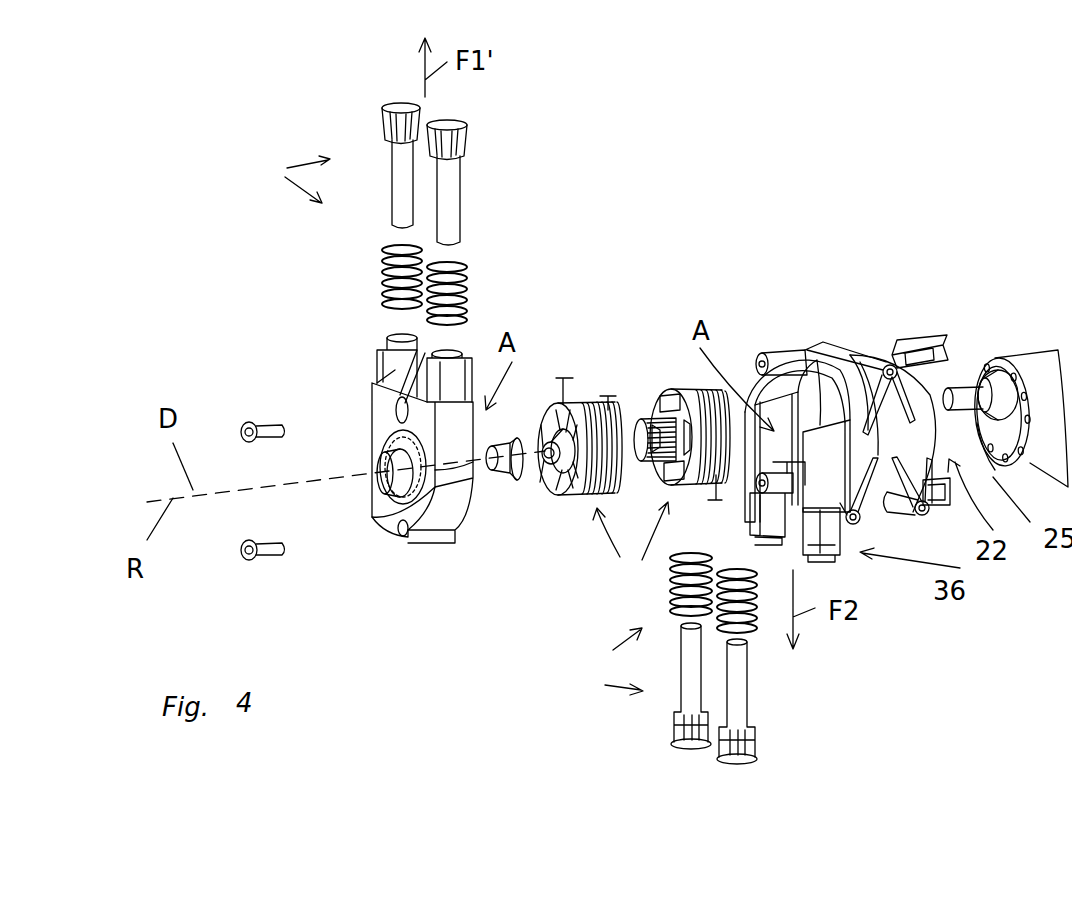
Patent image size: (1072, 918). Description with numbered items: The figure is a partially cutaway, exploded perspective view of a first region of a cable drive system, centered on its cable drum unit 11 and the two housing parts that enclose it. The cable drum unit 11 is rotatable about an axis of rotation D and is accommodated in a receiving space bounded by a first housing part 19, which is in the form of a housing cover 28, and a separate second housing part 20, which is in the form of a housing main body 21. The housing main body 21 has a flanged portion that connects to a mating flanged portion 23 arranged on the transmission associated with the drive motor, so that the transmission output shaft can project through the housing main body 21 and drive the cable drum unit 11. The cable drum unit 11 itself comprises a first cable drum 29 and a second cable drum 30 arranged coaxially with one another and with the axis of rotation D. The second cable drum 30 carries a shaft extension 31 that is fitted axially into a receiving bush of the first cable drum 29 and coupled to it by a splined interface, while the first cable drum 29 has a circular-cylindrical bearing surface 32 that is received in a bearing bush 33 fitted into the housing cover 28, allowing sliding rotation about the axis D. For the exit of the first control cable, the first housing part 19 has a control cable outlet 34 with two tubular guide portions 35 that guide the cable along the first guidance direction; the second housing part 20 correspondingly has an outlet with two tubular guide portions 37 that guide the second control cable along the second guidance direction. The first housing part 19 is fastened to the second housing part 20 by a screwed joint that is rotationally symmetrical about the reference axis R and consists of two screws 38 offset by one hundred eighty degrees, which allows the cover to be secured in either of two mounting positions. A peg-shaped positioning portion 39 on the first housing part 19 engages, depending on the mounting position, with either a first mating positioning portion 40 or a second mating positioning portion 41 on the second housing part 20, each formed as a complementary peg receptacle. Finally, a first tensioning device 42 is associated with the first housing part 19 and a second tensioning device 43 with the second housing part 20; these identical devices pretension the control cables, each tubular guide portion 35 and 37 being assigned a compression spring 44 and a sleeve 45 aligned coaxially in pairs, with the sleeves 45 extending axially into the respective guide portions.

The cable drum unit 11 is at (631, 555).
The first housing part 19 is at (447, 560).
The housing cover 28 is at (437, 517).
The second housing part 20 is at (790, 413).
The housing main body 21 is at (847, 385).
The mating flanged portion 23 is at (995, 358).
The first cable drum 29 is at (547, 420).
The second cable drum 30 is at (680, 387).
The shaft extension 31 is at (640, 420).
The circular-cylindrical bearing surface 32 is at (555, 493).
The bearing bush 33 is at (502, 477).
The control cable outlet 34 is at (342, 370).
The tubular guide portions 35 is at (388, 340).
The tubular guide portions 37 is at (760, 537).
The screws 38 is at (267, 427).
The positioning portion 39 is at (480, 470).
The first mating positioning portion 40 is at (823, 352).
The second mating positioning portion 41 is at (750, 415).
The first tensioning device 42 is at (281, 178).
The second tensioning device 43 is at (651, 693).
The compression spring 44 is at (383, 270).
The sleeve 45 is at (390, 157).